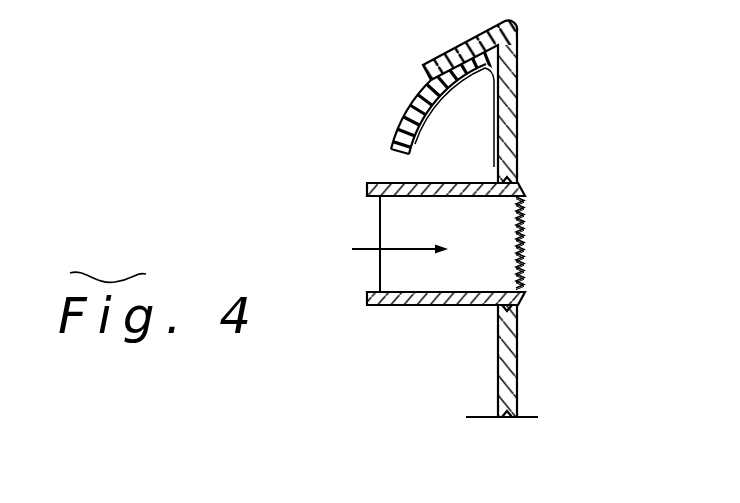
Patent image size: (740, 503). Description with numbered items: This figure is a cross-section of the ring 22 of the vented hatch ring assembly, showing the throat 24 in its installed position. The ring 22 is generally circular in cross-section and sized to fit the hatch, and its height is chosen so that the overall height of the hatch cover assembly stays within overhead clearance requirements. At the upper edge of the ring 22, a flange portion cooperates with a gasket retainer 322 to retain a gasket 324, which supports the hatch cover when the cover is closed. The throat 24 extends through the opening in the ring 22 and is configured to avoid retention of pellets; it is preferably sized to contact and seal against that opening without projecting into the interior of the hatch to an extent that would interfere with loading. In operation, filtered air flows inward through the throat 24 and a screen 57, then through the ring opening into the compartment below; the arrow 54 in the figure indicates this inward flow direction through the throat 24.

The ring 22 is at (507, 73).
The throat 24 is at (457, 307).
The air flow 54 is at (367, 247).
The screen 57 is at (527, 247).
The gasket retainer 322 is at (441, 112).
The gasket 324 is at (398, 122).